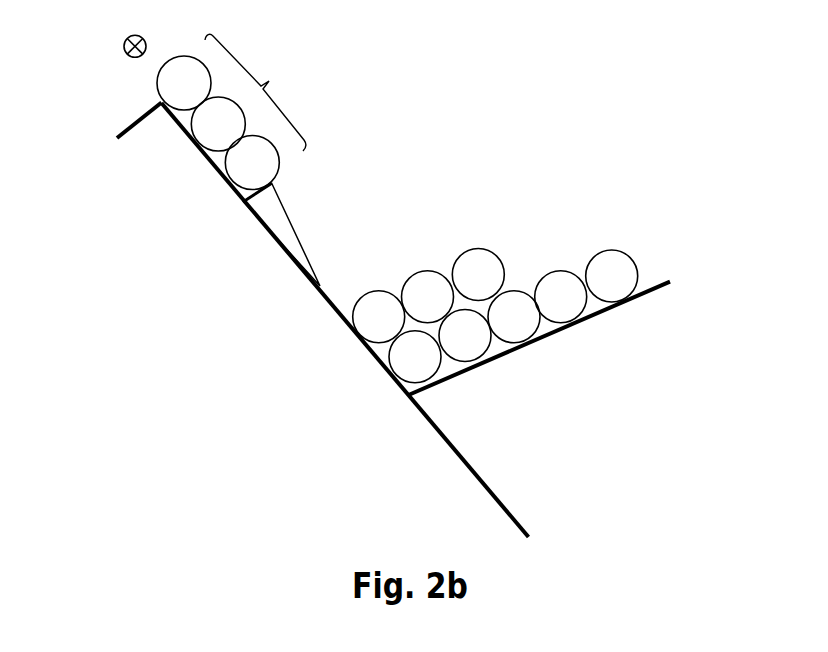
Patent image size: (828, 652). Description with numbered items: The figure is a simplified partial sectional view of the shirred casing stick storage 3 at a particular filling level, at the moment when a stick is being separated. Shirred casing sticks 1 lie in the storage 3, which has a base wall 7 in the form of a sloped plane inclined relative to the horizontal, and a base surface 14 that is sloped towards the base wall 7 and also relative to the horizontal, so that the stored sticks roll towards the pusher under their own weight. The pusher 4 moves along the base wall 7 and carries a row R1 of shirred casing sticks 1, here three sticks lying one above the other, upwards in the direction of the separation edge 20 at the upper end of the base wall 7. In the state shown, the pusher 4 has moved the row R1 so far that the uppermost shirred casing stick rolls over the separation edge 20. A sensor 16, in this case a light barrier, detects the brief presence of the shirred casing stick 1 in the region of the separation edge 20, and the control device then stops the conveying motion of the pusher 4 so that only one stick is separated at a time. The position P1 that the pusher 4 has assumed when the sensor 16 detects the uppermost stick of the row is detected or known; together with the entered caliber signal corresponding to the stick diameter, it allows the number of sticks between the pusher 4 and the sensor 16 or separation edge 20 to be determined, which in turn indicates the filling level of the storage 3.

The shirred casing stick 1 is at (620, 266).
The shirred casing stick storage 3 is at (407, 96).
The pusher 4 is at (273, 220).
The base wall 7 is at (337, 313).
The base surface 14 is at (553, 333).
The sensor 16 is at (124, 45).
The separation edge 20 is at (160, 105).
The pusher position P1 is at (243, 208).
The row of shirred casing sticks R1 is at (255, 92).